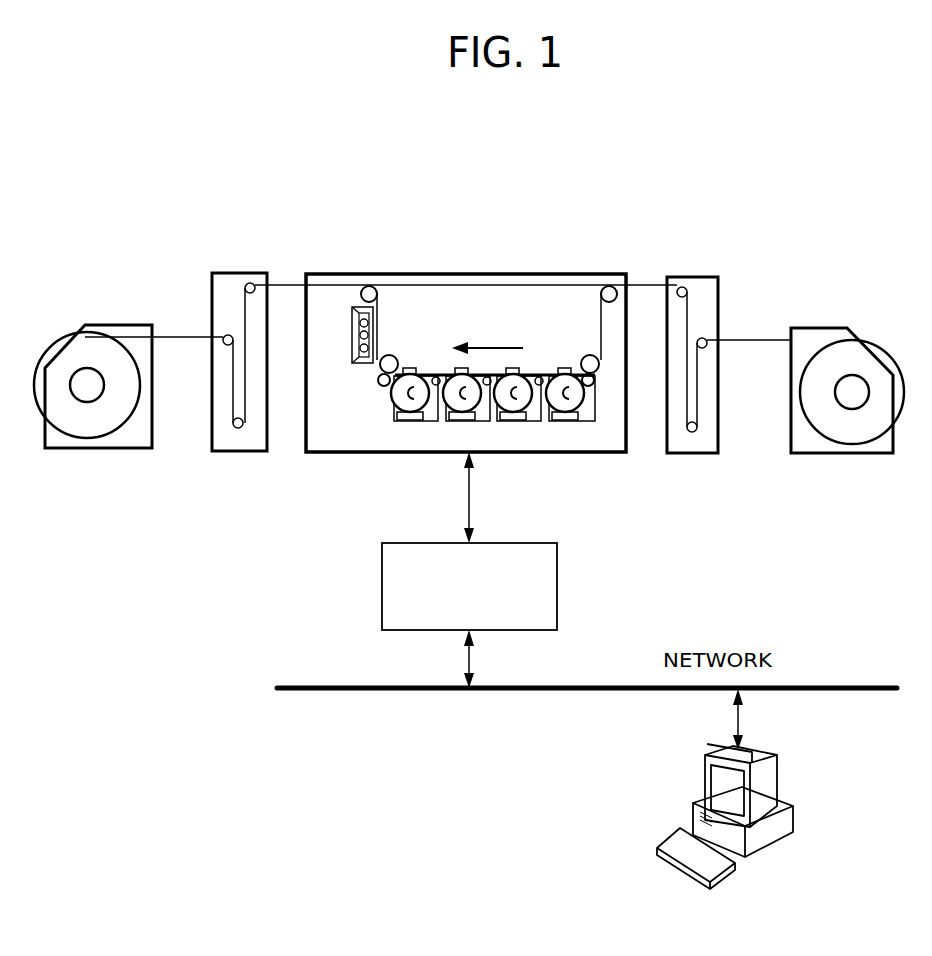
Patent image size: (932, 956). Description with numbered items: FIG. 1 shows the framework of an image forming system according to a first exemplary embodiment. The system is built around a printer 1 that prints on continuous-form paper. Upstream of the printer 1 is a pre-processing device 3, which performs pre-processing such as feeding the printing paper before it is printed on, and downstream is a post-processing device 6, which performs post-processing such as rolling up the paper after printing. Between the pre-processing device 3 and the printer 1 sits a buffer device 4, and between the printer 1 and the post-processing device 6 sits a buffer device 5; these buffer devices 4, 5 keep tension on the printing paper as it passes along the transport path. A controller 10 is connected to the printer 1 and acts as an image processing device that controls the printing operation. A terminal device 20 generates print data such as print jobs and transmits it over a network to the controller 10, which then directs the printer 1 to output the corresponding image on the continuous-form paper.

The printer 1 is at (383, 275).
The pre-processing device 3 is at (822, 327).
The buffer device 4 is at (690, 274).
The buffer device 5 is at (250, 271).
The post-processing device 6 is at (120, 323).
The controller 10 is at (382, 590).
The terminal device 20 is at (778, 783).